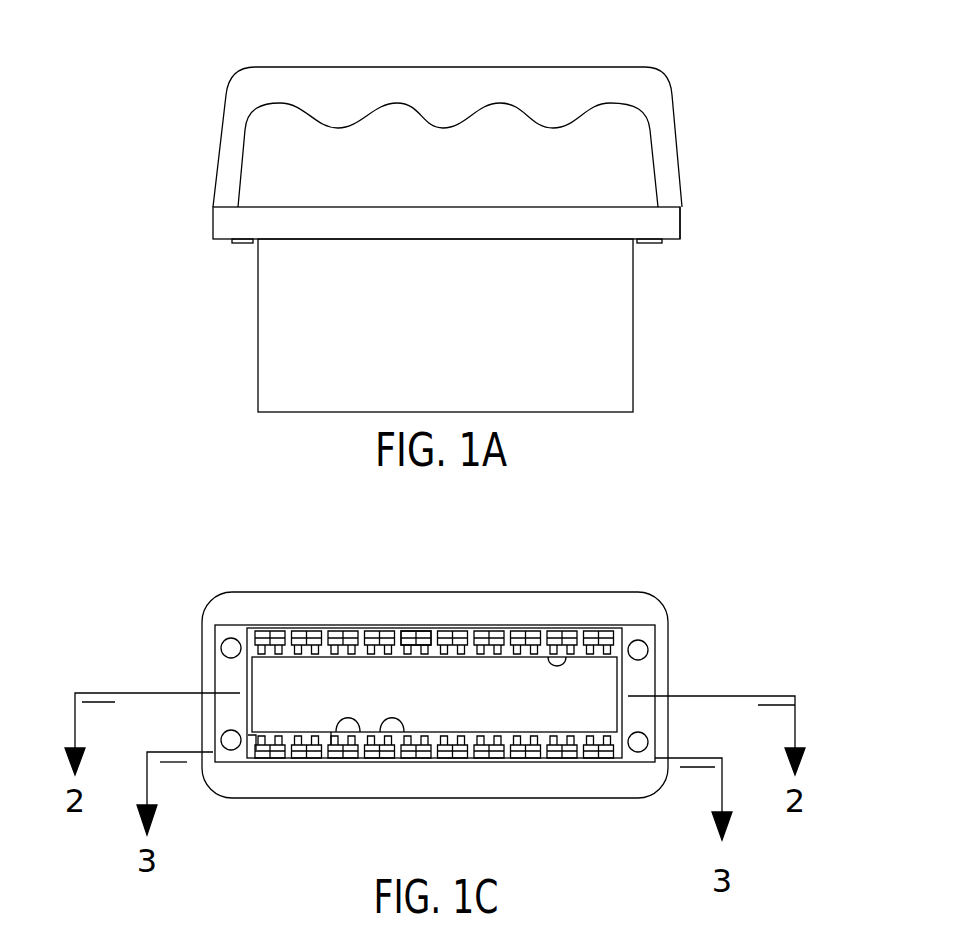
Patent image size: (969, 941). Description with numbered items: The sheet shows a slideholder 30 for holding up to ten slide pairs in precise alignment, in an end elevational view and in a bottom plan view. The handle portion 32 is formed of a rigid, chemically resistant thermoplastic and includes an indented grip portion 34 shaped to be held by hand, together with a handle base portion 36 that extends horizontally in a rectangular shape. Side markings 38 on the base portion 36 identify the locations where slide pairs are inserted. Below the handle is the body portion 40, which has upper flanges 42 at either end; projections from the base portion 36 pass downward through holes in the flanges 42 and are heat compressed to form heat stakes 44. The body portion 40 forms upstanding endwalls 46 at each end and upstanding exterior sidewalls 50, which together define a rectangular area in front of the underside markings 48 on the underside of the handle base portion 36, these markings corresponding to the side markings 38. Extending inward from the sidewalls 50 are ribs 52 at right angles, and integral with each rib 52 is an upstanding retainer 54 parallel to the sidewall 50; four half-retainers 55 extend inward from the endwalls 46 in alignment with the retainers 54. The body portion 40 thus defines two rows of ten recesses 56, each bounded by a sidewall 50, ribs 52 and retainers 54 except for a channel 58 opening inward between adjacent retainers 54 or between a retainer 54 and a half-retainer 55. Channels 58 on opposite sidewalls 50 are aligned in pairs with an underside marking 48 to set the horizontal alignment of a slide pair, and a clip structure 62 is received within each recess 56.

In FIG. 1A, the slideholder 30 is at (213, 239).
In FIG. 1A, the handle portion 32 is at (213, 208).
In FIG. 1A, the indented grip portion 34 is at (567, 88).
In FIG. 1A, the handle base portion 36 is at (682, 222).
In FIG. 1C, the handle base portion 36 is at (362, 668).
In FIG. 1A, the side markings 38 is at (278, 207).
In FIG. 1A, the body portion 40 is at (625, 315).
In FIG. 1C, the upper flanges 42 is at (220, 665).
In FIG. 1C, the heat stakes 44 is at (228, 638).
In FIG. 1C, the upstanding endwalls 46 is at (250, 680).
In FIG. 1C, the underside markings 48 is at (492, 713).
In FIG. 1C, the exterior sidewalls 50 is at (305, 758).
In FIG. 1C, the ribs 52 is at (470, 640).
In FIG. 1C, the retainers 54 is at (575, 655).
In FIG. 1C, the half-retainers 55 is at (620, 645).
In FIG. 1C, the recesses 56 is at (382, 760).
In FIG. 1C, the channel 58 is at (420, 748).
In FIG. 1C, the clip structure 62 is at (402, 640).